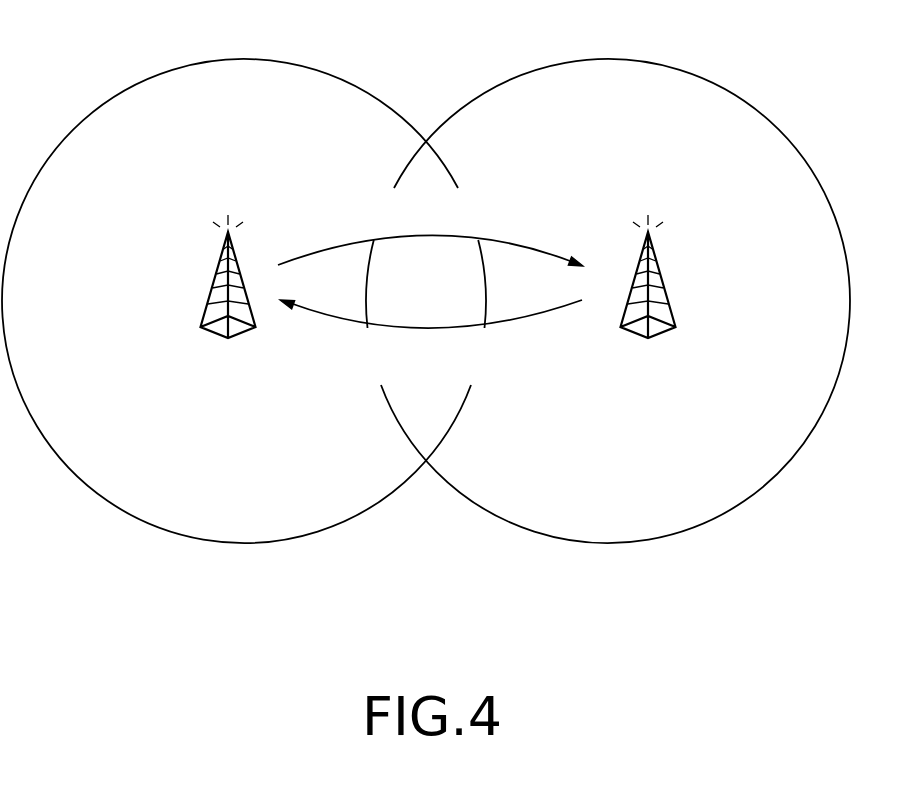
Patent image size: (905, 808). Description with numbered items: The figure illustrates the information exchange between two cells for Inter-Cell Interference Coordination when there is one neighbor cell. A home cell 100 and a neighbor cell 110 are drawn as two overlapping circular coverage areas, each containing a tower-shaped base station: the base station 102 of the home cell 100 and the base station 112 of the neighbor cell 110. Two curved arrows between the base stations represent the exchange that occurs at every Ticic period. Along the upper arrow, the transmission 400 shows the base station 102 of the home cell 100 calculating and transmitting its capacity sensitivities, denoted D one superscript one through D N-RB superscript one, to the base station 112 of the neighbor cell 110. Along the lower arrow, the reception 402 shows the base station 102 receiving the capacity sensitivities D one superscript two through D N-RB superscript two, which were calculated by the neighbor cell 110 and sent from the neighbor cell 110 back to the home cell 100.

The home cell 100 is at (243, 60).
The neighbor cell 110 is at (604, 62).
The base station 102 is at (212, 281).
The base station 112 is at (665, 280).
The transmission of capacity sensitivities 400 is at (312, 252).
The reception of capacity sensitivities 402 is at (323, 315).